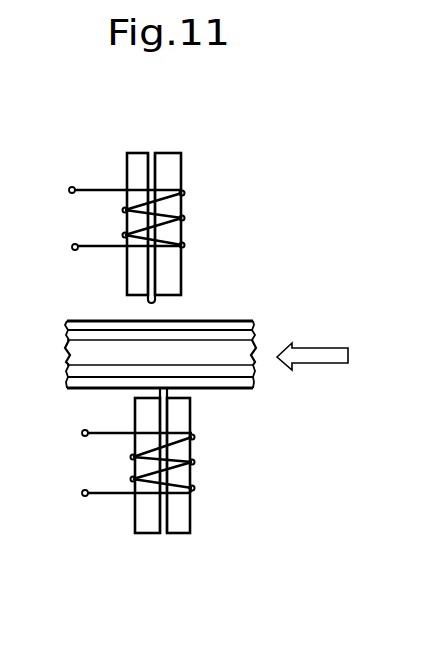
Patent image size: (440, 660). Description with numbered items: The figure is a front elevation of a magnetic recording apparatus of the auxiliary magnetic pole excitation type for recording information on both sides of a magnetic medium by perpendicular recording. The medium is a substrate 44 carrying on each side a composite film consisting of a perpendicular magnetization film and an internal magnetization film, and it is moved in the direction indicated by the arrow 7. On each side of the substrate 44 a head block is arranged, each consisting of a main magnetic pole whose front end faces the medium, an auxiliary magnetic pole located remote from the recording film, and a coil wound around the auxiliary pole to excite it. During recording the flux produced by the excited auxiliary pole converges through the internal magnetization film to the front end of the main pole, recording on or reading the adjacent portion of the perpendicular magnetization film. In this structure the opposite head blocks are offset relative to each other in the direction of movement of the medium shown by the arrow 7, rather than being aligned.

The substrate 44 is at (82, 357).
The arrow 7 is at (322, 362).